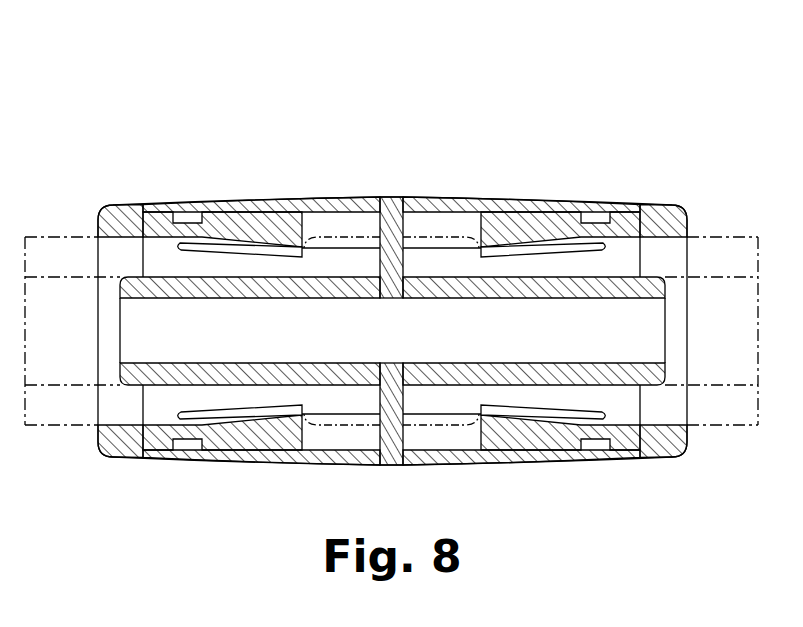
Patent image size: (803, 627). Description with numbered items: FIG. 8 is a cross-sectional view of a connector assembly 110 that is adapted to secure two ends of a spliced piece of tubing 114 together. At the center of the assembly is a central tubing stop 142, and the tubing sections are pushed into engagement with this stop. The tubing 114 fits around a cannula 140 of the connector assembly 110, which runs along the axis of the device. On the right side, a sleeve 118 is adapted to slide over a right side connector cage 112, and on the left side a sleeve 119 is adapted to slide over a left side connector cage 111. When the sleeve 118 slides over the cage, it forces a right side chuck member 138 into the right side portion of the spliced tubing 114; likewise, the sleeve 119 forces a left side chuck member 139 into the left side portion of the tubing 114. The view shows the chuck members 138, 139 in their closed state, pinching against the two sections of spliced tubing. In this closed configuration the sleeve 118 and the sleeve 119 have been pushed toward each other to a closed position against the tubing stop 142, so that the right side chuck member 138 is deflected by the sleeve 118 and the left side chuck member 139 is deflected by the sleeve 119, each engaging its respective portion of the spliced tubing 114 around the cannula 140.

The connector assembly 110 is at (450, 96).
The left side connector cage 111 is at (323, 226).
The right side connector cage 112 is at (436, 226).
The tubing 114 is at (77, 250).
The sleeve 118 is at (522, 204).
The sleeve 119 is at (165, 205).
The right side chuck member 138 is at (548, 232).
The left side chuck member 139 is at (234, 232).
The cannula 140 is at (128, 377).
The central tubing stop 142 is at (394, 205).